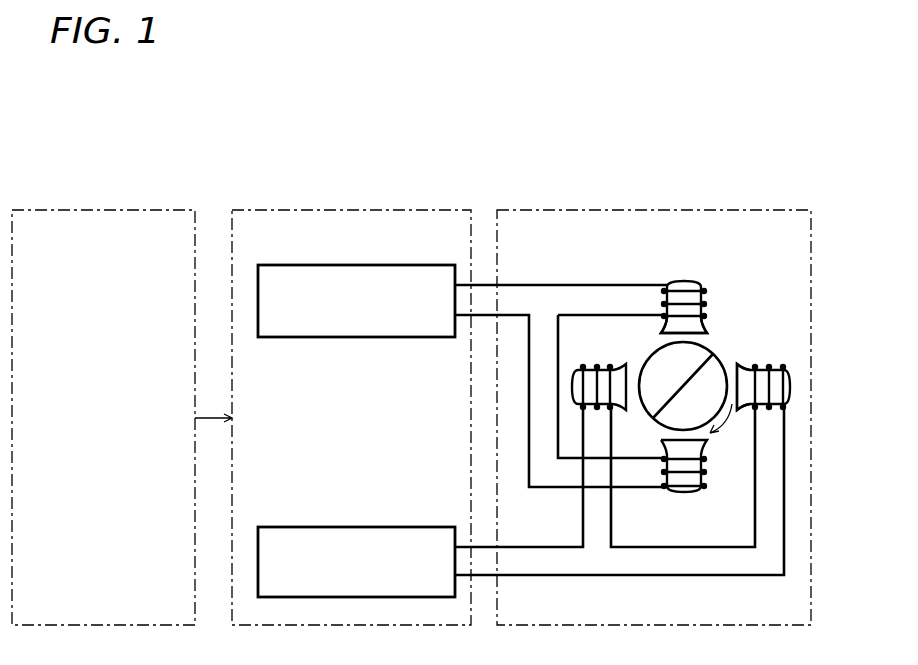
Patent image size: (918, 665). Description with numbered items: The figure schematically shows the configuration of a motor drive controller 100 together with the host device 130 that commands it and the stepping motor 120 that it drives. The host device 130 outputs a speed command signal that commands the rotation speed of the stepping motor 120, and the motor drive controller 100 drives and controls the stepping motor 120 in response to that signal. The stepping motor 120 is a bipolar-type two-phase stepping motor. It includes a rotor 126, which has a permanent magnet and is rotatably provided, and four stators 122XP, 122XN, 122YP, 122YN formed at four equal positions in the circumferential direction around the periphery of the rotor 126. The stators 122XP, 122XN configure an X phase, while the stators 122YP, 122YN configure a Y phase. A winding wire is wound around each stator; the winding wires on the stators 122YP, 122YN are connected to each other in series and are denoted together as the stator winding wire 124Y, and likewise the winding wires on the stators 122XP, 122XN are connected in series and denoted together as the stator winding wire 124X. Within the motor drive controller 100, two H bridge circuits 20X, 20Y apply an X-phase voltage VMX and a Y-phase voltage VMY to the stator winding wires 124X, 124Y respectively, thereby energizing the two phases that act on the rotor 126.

The host device 130 is at (120, 209).
The motor drive controller 100 is at (385, 209).
The stepping motor 120 is at (745, 209).
The H bridge circuit 20Y is at (418, 265).
The H bridge circuit 20X is at (418, 527).
The stator 122YP is at (697, 260).
The stator 122YN is at (684, 494).
The stator 122XP is at (611, 366).
The stator 122XN is at (791, 382).
The stator winding wire 124Y is at (708, 298).
The stator winding wire 124X is at (767, 366).
The rotor 126 is at (707, 349).